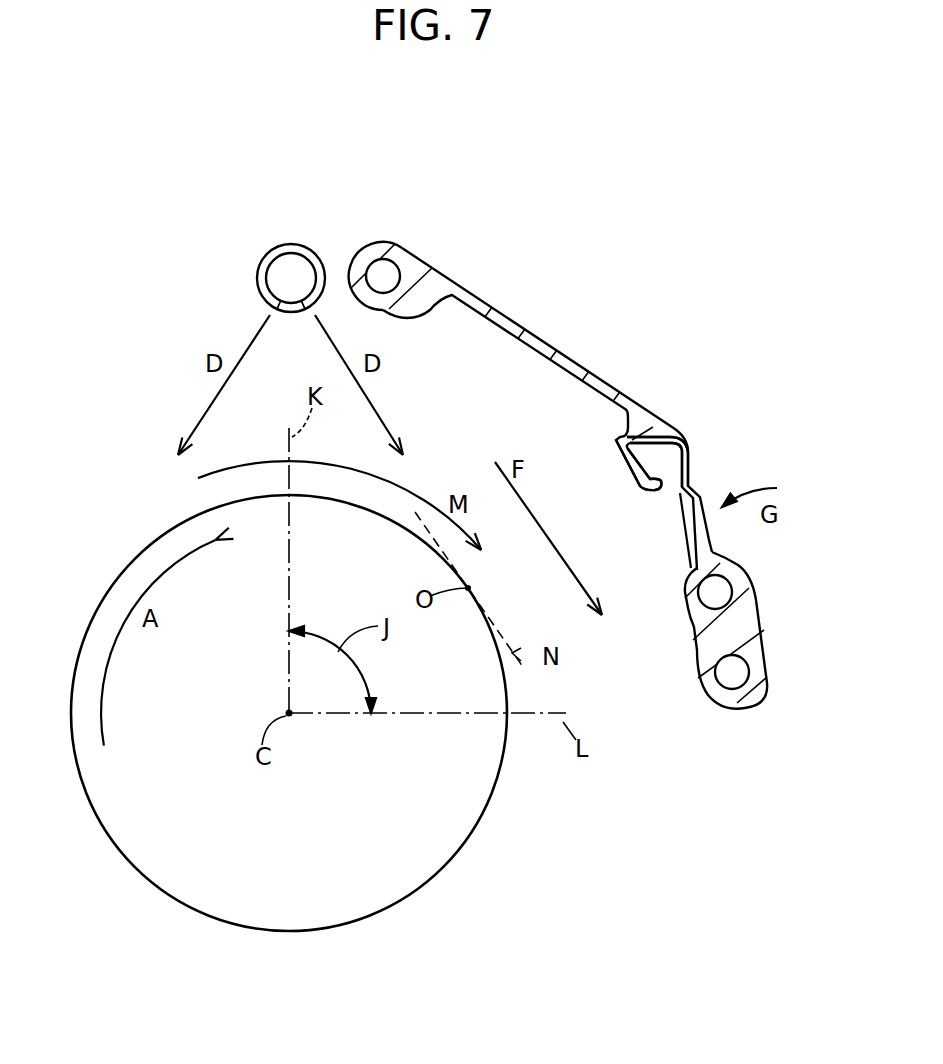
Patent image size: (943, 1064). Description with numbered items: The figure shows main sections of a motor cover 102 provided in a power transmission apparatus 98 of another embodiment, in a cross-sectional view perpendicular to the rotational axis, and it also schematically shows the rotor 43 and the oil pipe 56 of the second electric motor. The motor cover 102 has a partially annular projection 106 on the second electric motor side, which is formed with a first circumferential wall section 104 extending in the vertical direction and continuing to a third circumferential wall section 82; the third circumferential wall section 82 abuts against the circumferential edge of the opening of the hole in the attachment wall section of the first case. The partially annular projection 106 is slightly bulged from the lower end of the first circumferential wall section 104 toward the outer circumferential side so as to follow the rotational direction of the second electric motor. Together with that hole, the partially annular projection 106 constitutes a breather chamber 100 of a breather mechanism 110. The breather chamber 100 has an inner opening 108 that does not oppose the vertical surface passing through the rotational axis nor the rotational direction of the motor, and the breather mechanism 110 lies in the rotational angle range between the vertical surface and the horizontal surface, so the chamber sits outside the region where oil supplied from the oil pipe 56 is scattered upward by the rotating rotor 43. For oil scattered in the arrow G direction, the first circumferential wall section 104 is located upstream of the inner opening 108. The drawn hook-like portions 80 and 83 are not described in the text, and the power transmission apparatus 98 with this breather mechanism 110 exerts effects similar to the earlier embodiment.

The power transmission apparatus 98 is at (178, 163).
The rotor 43 is at (428, 882).
The oil pipe 56 is at (292, 244).
The motor cover 102 is at (530, 397).
The partially annular projection 106 is at (511, 326).
The third circumferential wall section 82 is at (656, 432).
The hook 80 is at (623, 462).
The hook tip 83 is at (653, 492).
The breather chamber 100 is at (660, 447).
The first circumferential wall section 104 is at (688, 468).
The inner opening 108 is at (676, 492).
The breather mechanism 110 is at (700, 363).